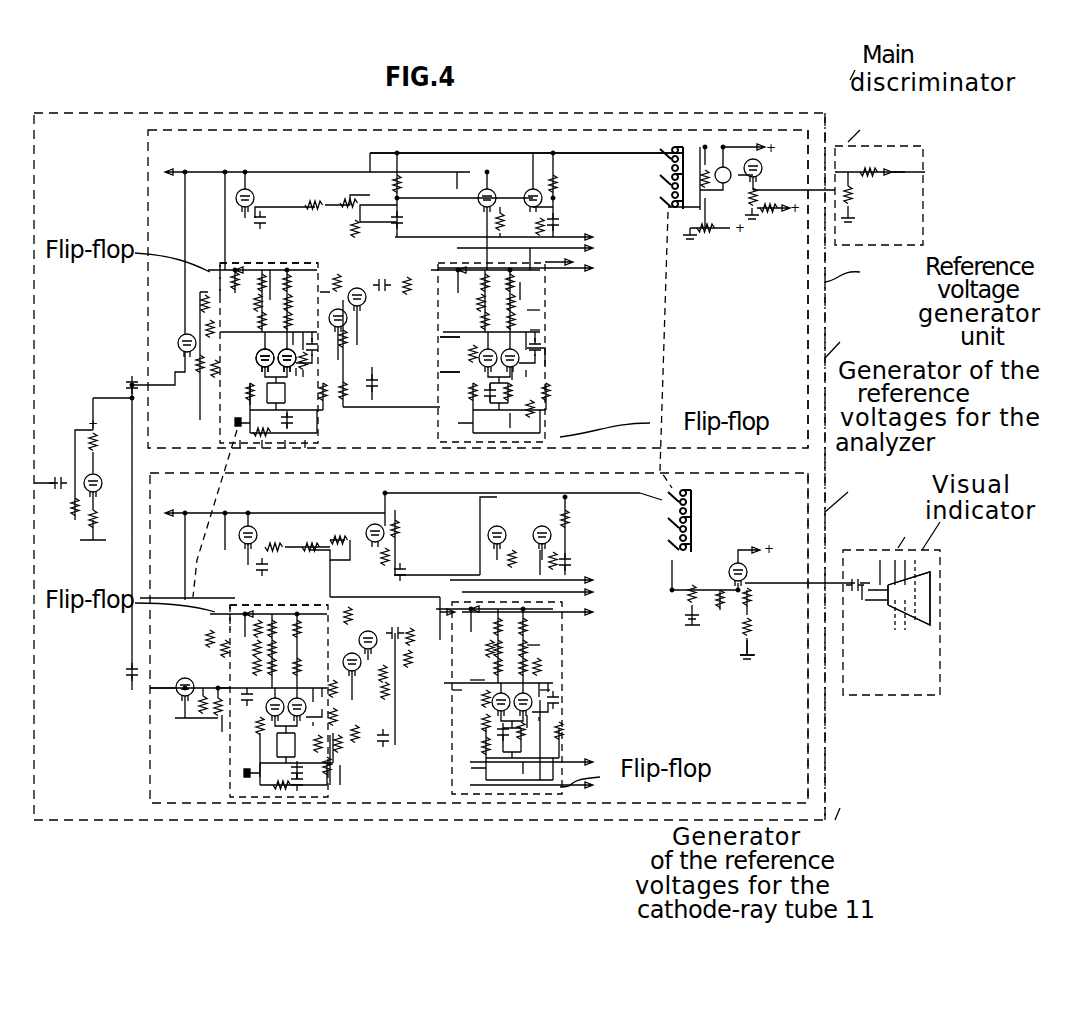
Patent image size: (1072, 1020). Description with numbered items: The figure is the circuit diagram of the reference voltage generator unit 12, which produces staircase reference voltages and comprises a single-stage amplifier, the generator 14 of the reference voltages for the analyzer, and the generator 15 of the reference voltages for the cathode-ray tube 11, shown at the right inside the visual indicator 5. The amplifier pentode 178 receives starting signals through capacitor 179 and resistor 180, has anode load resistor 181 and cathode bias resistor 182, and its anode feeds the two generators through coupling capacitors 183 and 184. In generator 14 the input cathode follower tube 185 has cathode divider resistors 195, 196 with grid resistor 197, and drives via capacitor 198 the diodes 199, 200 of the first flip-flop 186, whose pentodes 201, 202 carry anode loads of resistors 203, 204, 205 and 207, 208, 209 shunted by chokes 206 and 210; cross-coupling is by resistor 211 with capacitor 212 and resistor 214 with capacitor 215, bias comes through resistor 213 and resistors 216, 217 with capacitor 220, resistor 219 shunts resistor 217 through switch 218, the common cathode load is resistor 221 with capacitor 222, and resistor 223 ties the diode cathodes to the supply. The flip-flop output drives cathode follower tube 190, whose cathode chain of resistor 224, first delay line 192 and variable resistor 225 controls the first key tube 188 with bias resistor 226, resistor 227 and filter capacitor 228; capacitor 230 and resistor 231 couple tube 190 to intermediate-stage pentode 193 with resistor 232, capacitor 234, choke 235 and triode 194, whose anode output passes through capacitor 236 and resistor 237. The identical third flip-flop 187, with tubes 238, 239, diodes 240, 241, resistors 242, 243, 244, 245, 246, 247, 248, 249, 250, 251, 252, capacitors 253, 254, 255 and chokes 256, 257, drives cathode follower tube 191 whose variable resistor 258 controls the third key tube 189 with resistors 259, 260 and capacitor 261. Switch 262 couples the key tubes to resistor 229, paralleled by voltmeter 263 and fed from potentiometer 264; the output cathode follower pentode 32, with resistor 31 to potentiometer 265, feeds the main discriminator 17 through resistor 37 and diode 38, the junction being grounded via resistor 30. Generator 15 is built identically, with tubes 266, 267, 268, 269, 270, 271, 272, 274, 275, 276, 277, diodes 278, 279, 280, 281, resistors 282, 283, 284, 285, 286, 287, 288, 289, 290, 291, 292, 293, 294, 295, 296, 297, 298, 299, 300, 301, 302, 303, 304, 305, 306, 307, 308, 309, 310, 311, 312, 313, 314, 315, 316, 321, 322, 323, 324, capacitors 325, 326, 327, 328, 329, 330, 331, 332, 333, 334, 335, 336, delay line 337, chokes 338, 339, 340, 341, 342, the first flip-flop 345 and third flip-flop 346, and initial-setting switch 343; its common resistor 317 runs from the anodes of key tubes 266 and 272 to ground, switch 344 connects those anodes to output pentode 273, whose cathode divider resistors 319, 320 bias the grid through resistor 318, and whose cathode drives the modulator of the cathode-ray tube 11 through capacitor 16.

The first key tube 188 is at (375, 155).
The tube of the first cathode follower 190 is at (252, 195).
The first delay line 192 is at (315, 200).
The resistor 227 is at (401, 186).
The tube of the third cathode follower 191 is at (490, 190).
The third key tube 189 is at (530, 192).
The resistor 260 is at (557, 186).
The resistor 259 is at (543, 220).
The capacitor 261 is at (559, 222).
The switch 262 is at (664, 158).
The resistor 229 is at (704, 172).
The voltmeter 263 is at (727, 181).
The tube 32 is at (762, 166).
The resistor 31 is at (757, 193).
The potentiometer 264 is at (707, 232).
The potentiometer 265 is at (770, 213).
The main discriminator 17 is at (848, 144).
The resistor 37 is at (870, 178).
The diode 38 is at (891, 177).
The resistor 30 is at (853, 206).
The reference voltage generator unit 12 is at (827, 296).
The generator of the reference voltages for the analyzer 14 is at (822, 352).
The generator of the reference voltages for the cathode-ray tube 15 is at (815, 508).
The visual indicator 5 is at (885, 550).
The cathode-ray tube 11 is at (922, 570).
The capacitor 16 is at (857, 582).
The tube 273 is at (745, 566).
The resistor 317 is at (688, 597).
The resistor 318 is at (718, 606).
The resistor 319 is at (751, 598).
The resistor 320 is at (751, 629).
The switch 344 is at (668, 500).
The resistor 224 is at (266, 221).
The variable resistor 225 is at (347, 208).
The bias resistor 226 is at (352, 232).
The filter capacitor 228 is at (403, 218).
The variable resistor 258 is at (498, 222).
The capacitor 230 is at (236, 270).
The correcting choke 206 is at (270, 265).
The first flip-flop 186 is at (220, 264).
The choke 210 is at (272, 280).
The choke 235 is at (337, 275).
The tube 194 is at (358, 288).
The capacitor 236 is at (383, 279).
The resistor 237 is at (410, 288).
The third flip-flop 187 is at (573, 262).
The resistor 223 is at (210, 292).
The resistor 203 is at (253, 281).
The resistor 207 is at (290, 283).
The resistor 196 is at (203, 300).
The resistor 204 is at (245, 301).
The resistor 208 is at (300, 301).
The capacitor 198 is at (208, 325).
The resistor 205 is at (251, 321).
The diode 200 is at (285, 349).
The resistor 209 is at (300, 321).
The tube 185 is at (180, 336).
The resistor 211 is at (298, 338).
The capacitor 212 is at (316, 345).
The tube 193 is at (342, 326).
The pentode 201 is at (310, 360).
The pentode 202 is at (305, 374).
The resistor 231 is at (345, 350).
The resistor 232 is at (350, 390).
The resistor 216 is at (331, 390).
The capacitor 234 is at (378, 383).
The diode 240 is at (440, 340).
The diode 241 is at (440, 372).
The diode 199 is at (257, 362).
The capacitor 215 is at (240, 394).
The resistor 214 is at (250, 395).
The resistor 213 is at (238, 423).
The capacitor 222 is at (260, 424).
The resistor 221 is at (295, 427).
The coupling capacitor 183 is at (119, 381).
The resistor 197 is at (197, 375).
The resistor 195 is at (214, 380).
The resistor 181 is at (97, 446).
The capacitor 179 is at (58, 477).
The tube 178 is at (104, 485).
The resistor 180 is at (72, 512).
The bias resistor 182 is at (97, 516).
The switch 218 is at (240, 445).
The resistor 219 is at (262, 445).
The resistor 217 is at (285, 445).
The capacitor 220 is at (305, 445).
The resistor 252 is at (481, 282).
The resistor 246 is at (521, 280).
The correcting choke 256 is at (520, 297).
The resistor 242 is at (477, 302).
The resistor 247 is at (516, 300).
The resistor 243 is at (527, 310).
The correcting choke 257 is at (481, 318).
The resistor 248 is at (516, 318).
The tube 238 is at (530, 330).
The resistor 249 is at (541, 342).
The capacitor 253 is at (545, 360).
The tube 239 is at (512, 372).
The resistor 250 is at (551, 388).
The capacitor 255 is at (470, 362).
The resistor 244 is at (461, 389).
The resistor 245 is at (488, 404).
The capacitor 254 is at (508, 404).
The resistor 251 is at (534, 418).
The tube 277 is at (255, 527).
The tube 266 is at (372, 524).
The tube 271 is at (500, 526).
The tube 272 is at (538, 530).
The resistor 315 is at (569, 520).
The resistor 295 is at (277, 538).
The delay line 337 is at (316, 538).
The resistor 298 is at (399, 533).
The capacitor 325 is at (268, 565).
The resistor 296 is at (330, 551).
The resistor 297 is at (390, 556).
The capacitor 326 is at (406, 572).
The resistor 314 is at (503, 558).
The resistor 316 is at (557, 555).
The capacitor 332 is at (571, 562).
The first flip-flop 345 is at (232, 610).
The resistor 284 is at (270, 615).
The tube 267 is at (348, 608).
The choke 340 is at (370, 630).
The tube 268 is at (398, 625).
The third flip-flop 346 is at (455, 612).
The resistor 323 is at (207, 642).
The diode 278 is at (222, 650).
The diode 279 is at (183, 678).
The resistor 324 is at (250, 627).
The resistor 287 is at (283, 627).
The resistor 288 is at (308, 627).
The resistor 302 is at (420, 633).
The resistor 305 is at (494, 628).
The resistor 308 is at (535, 626).
The choke 342 is at (527, 645).
The resistor 285 is at (246, 647).
The choke 339 is at (279, 647).
The capacitor 328 is at (400, 645).
The resistor 306 is at (487, 650).
The choke 341 is at (509, 647).
The resistor 309 is at (528, 650).
The choke 338 is at (258, 666).
The resistor 286 is at (282, 666).
The resistor 289 is at (307, 666).
The capacitor 335 is at (368, 669).
The diode 280 is at (468, 668).
The resistor 307 is at (490, 668).
The tube 269 is at (515, 668).
The resistor 310 is at (547, 668).
The coupling capacitor 184 is at (119, 670).
The tube 274 is at (150, 688).
The resistor 322 is at (189, 706).
The resistor 321 is at (215, 716).
The capacitor 333 is at (222, 732).
The capacitor 334 is at (247, 704).
The resistor 282 is at (262, 785).
The tube 275 is at (350, 672).
The resistor 290 is at (337, 690).
The resistor 301 is at (389, 690).
The diode 281 is at (452, 690).
The tube 276 is at (344, 715).
The resistor 300 is at (358, 728).
The capacitor 327 is at (389, 739).
The capacitor 329 is at (483, 706).
The resistor 303 is at (471, 724).
The resistor 304 is at (472, 745).
The resistor 311 is at (550, 690).
The capacitor 331 is at (559, 702).
The tube 270 is at (527, 715).
The resistor 312 is at (562, 742).
The resistor 291 is at (322, 741).
The resistor 299 is at (347, 741).
The resistor 283 is at (260, 775).
The switch 343 is at (244, 775).
The resistor 292 is at (303, 772).
The resistor 294 is at (283, 790).
The resistor 293 is at (300, 790).
The capacitor 336 is at (327, 777).
The capacitor 330 is at (503, 742).
The resistor 313 is at (522, 742).